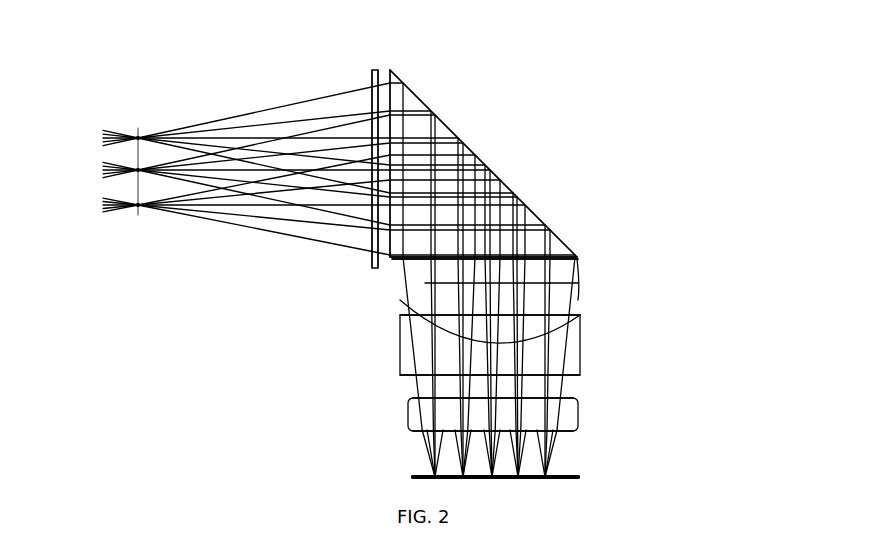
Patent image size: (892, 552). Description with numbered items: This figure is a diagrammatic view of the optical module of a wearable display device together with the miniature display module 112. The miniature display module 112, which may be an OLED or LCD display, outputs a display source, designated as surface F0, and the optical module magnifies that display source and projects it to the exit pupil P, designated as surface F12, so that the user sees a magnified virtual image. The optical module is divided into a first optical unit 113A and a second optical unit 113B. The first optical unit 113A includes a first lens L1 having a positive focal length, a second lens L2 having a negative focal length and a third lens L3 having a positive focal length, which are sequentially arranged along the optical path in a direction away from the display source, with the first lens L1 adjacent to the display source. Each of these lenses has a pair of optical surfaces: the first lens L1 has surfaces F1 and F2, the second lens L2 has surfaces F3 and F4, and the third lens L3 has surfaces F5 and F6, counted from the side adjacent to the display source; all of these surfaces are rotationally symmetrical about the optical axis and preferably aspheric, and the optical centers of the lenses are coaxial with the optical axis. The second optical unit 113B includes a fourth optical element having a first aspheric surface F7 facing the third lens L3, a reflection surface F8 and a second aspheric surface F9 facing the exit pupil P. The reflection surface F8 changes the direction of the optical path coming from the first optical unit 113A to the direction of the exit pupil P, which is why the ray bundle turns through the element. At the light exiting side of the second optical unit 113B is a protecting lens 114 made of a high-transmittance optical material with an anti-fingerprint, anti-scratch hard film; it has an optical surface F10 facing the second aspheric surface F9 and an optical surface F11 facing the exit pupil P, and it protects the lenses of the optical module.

The exit pupil P is at (138, 194).
The exit pupil F12 is at (137, 126).
The protecting lens 114 is at (276, 70).
The optical surface F11 is at (378, 102).
The optical surface F10 is at (372, 70).
The second optical unit 113B is at (642, 61).
The second aspheric surface F9 is at (388, 108).
The reflection surface F8 is at (450, 128).
The first aspheric surface F7 is at (572, 256).
The first optical unit 113A is at (518, 345).
The third lens L3 is at (474, 301).
The second lens L2 is at (483, 341).
The first lens L1 is at (483, 395).
The optical surface F6 is at (390, 262).
The optical surface F5 is at (403, 298).
The optical surface F4 is at (399, 316).
The optical surface F3 is at (414, 372).
The optical surface F2 is at (416, 397).
The optical surface F1 is at (410, 420).
The display source F0 is at (418, 476).
The miniature display module 112 is at (493, 453).